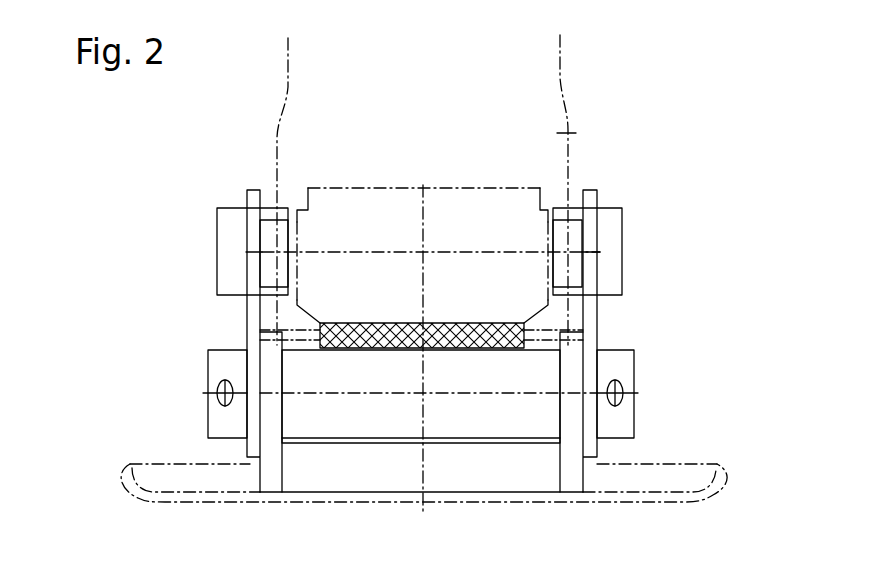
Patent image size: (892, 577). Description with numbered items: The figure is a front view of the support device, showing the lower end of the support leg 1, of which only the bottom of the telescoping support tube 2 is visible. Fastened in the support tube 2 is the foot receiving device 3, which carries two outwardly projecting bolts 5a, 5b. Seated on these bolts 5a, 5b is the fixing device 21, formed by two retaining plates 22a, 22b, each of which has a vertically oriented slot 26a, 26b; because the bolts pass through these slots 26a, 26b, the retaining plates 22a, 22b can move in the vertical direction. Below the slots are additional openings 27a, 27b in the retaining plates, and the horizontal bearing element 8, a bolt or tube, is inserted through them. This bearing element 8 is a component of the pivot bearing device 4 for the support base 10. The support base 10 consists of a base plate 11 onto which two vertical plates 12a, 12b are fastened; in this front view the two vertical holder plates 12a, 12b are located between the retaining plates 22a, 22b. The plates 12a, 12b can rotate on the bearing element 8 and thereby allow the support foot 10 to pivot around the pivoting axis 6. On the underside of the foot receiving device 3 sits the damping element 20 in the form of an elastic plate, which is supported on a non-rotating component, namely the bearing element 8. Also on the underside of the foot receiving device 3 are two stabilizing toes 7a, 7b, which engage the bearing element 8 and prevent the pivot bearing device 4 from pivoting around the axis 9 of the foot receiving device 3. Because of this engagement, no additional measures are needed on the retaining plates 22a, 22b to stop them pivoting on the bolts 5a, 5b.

The support leg 1 is at (603, 155).
The support tube 2 is at (563, 133).
The foot receiving device 3 is at (348, 220).
The pivot bearing device 4 is at (195, 360).
The bolt 5a is at (233, 223).
The bolt 5b is at (610, 222).
The pivoting axis 6 is at (335, 396).
The stabilizing toe 7a is at (312, 345).
The stabilizing toe 7b is at (497, 352).
The bearing element 8 is at (369, 414).
The axis of the foot receiving device 9 is at (398, 252).
The support base 10 is at (688, 427).
The base plate 11 is at (670, 501).
The vertical plate 12a is at (270, 470).
The vertical plate 12b is at (572, 468).
The damping element 20 is at (524, 325).
The fixing device 21 is at (656, 240).
The retaining plate 22a is at (252, 280).
The retaining plate 22b is at (597, 330).
The slot 26a is at (252, 310).
The slot 26b is at (590, 287).
The opening 27a is at (247, 430).
The opening 27b is at (597, 427).